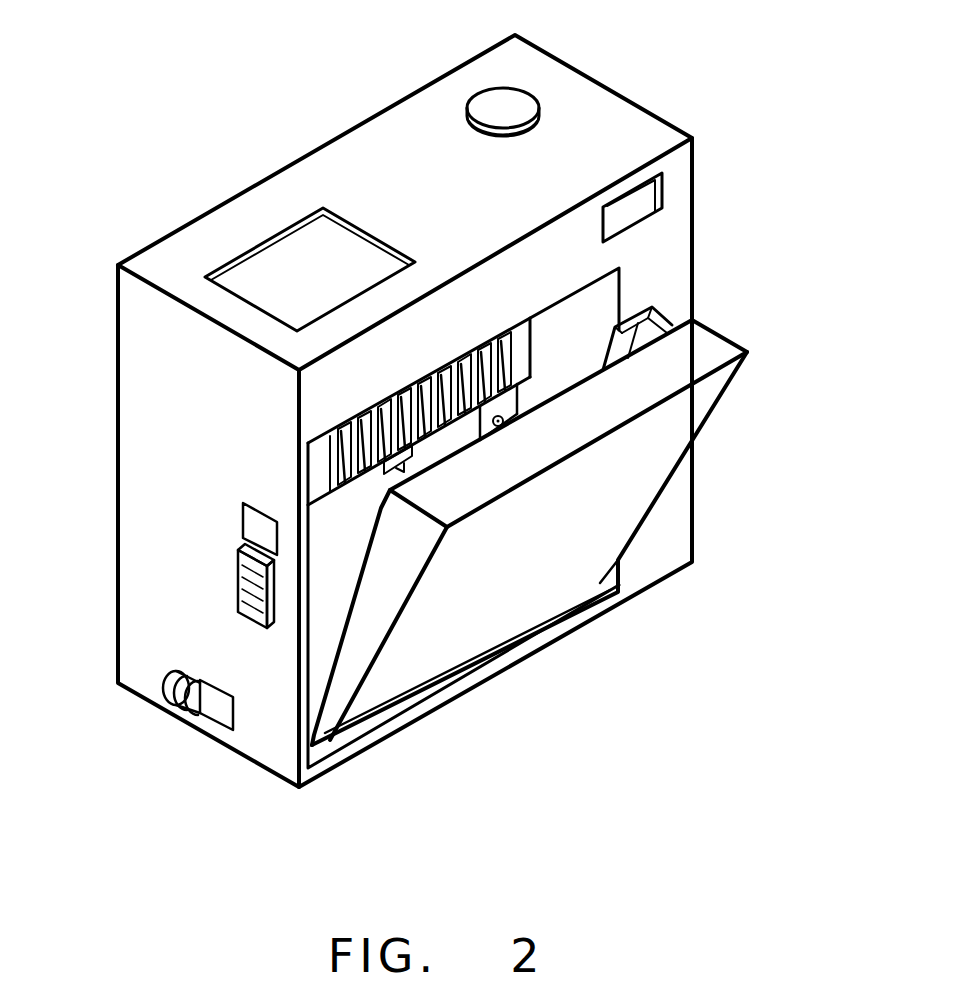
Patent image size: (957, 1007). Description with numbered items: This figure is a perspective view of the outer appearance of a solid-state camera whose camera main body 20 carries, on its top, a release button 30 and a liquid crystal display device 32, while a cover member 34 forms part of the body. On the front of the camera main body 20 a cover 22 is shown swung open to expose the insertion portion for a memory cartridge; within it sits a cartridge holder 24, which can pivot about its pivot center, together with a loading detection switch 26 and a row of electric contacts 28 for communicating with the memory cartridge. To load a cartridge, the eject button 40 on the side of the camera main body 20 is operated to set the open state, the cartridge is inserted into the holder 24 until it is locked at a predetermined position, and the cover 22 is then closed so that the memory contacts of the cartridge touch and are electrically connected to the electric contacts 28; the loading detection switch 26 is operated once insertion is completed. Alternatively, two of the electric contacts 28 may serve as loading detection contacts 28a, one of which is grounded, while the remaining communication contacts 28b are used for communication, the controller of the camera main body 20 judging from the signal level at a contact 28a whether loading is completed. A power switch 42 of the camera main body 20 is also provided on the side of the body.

The camera main body 20 is at (345, 115).
The cover 22 is at (723, 385).
The cartridge holder 24 is at (667, 318).
The loading detection switch 26 is at (505, 421).
The electric contacts 28 is at (419, 539).
The loading detection contacts 28a is at (523, 306).
The communication contacts 28b is at (471, 340).
The release button 30 is at (523, 103).
The liquid crystal display device 32 is at (288, 263).
The cover member 34 is at (637, 128).
The eject button 40 is at (238, 580).
The power switch 42 is at (167, 703).